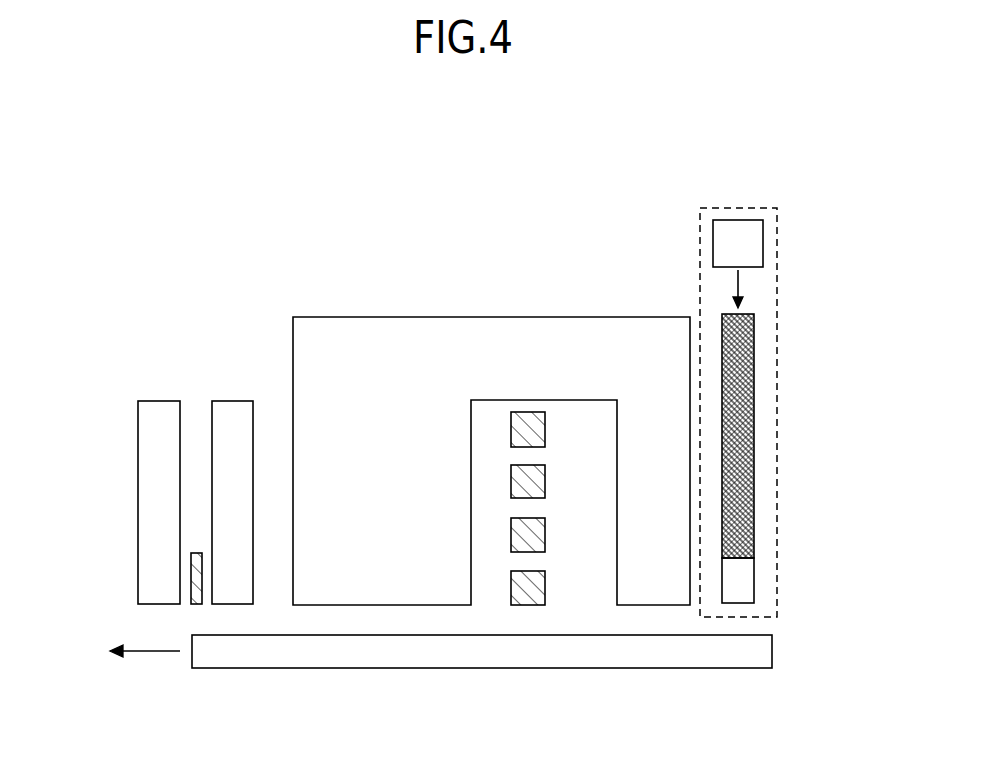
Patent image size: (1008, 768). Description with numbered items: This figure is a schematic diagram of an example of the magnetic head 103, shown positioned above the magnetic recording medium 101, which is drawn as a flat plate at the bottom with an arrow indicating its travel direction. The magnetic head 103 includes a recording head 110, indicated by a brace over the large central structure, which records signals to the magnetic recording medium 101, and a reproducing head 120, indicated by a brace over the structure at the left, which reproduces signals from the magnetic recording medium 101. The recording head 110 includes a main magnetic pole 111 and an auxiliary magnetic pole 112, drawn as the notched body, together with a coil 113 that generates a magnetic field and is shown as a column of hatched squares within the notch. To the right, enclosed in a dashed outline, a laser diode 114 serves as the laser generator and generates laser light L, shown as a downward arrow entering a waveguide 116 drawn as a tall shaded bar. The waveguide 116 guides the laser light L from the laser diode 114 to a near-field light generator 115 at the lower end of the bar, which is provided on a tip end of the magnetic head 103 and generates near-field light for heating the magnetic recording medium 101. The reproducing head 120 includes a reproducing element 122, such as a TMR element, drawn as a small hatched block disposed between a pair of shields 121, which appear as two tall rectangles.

The magnetic recording medium 101 is at (758, 650).
The magnetic head 103 is at (839, 134).
The recording head 110 is at (790, 182).
The main magnetic pole 111 is at (673, 533).
The auxiliary magnetic pole 112 is at (442, 516).
The coil 113 is at (530, 429).
The laser diode 114 is at (738, 249).
The near-field light generator 115 is at (737, 575).
The waveguide 116 is at (737, 354).
The reproducing head 120 is at (258, 329).
The shields 121 is at (232, 415).
The reproducing element 122 is at (198, 593).
The laser light L is at (747, 285).